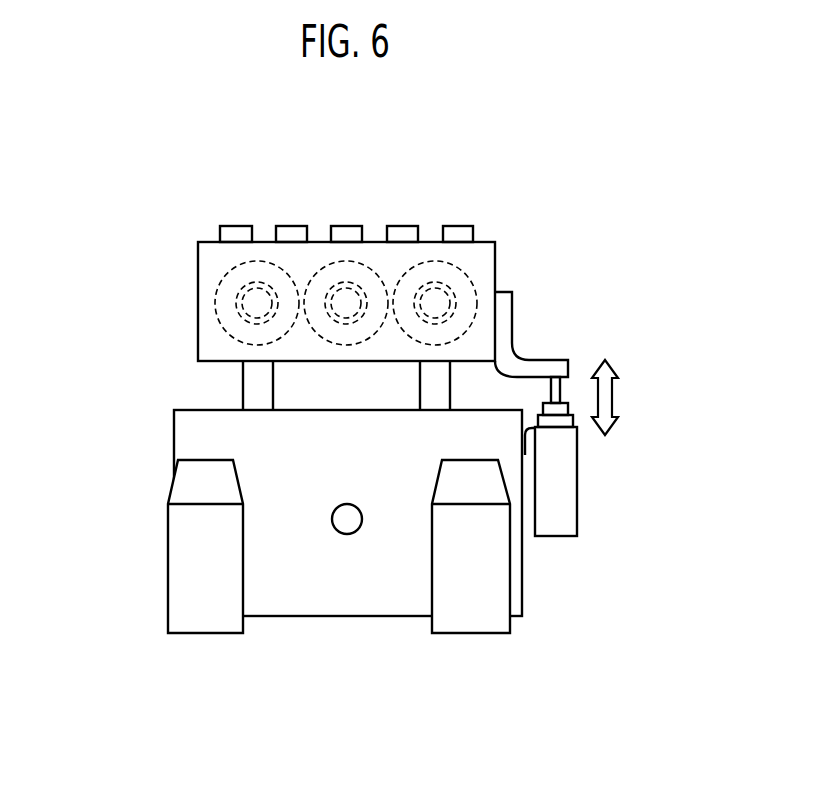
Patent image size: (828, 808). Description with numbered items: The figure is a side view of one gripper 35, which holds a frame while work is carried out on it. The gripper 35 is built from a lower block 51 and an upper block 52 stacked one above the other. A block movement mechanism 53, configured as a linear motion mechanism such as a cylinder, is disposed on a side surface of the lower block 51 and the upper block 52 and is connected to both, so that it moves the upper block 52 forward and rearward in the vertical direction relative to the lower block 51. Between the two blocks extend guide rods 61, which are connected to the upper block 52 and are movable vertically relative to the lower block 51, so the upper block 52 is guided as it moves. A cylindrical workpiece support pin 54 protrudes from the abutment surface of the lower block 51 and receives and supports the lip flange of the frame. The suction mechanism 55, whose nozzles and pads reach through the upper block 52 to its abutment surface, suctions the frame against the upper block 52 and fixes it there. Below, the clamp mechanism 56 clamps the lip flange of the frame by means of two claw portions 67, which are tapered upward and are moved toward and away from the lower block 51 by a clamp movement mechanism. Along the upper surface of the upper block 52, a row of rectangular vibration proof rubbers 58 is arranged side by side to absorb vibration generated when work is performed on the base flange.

The gripper 35 is at (495, 185).
The upper block 52 is at (198, 268).
The vibration proof rubber 58 is at (236, 226).
The suction mechanism 55 is at (467, 273).
The guide rod 61 is at (243, 382).
The block movement mechanism 53 is at (578, 473).
The clamp mechanism 56 is at (163, 603).
The lower block 51 is at (522, 593).
The claw portion 67 is at (168, 543).
The workpiece support pin 54 is at (347, 534).